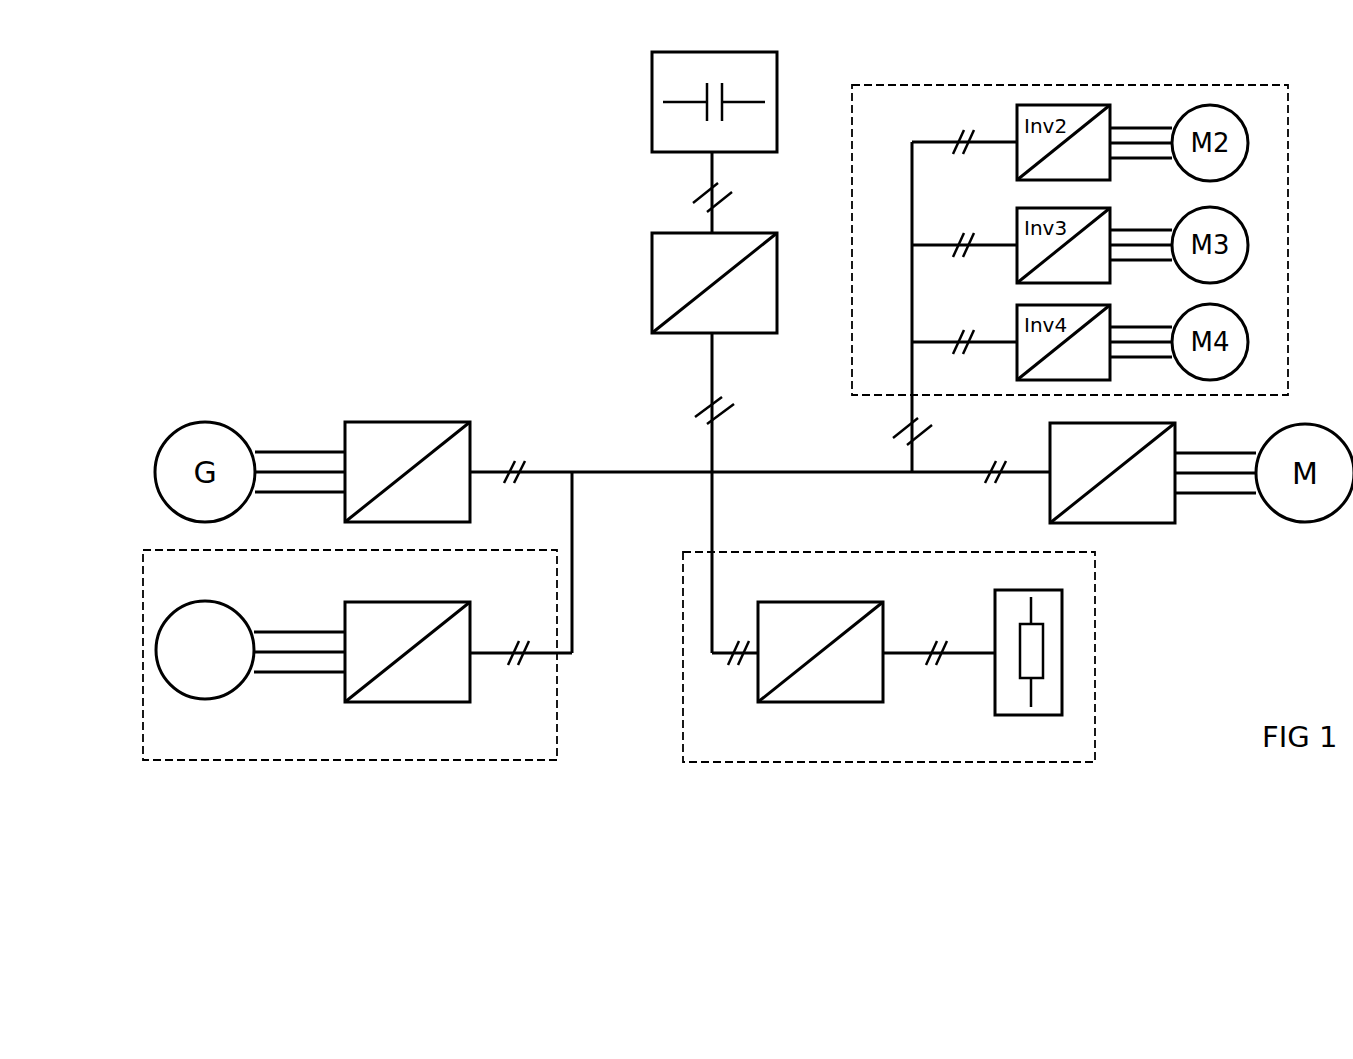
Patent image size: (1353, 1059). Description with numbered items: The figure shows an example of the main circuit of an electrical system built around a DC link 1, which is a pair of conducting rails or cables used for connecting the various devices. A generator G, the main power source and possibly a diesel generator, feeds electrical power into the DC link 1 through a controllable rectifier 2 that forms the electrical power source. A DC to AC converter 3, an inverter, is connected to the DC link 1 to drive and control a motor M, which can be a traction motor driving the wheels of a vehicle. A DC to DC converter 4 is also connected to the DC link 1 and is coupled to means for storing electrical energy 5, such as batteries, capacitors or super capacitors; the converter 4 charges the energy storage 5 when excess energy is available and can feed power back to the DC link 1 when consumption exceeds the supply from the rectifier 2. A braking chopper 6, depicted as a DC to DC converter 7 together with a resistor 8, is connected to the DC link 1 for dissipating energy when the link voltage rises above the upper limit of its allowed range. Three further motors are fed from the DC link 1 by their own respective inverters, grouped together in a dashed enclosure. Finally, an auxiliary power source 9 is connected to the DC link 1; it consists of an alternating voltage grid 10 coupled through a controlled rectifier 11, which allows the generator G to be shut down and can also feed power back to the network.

The DC link 1 is at (737, 470).
The controllable rectifier 2 is at (368, 422).
The DC to AC converter 3 is at (1125, 523).
The DC to DC converter 4 is at (652, 288).
The means for storing electrical energy 5 is at (652, 108).
The braking chopper 6 is at (889, 701).
The DC to DC converter 7 is at (808, 705).
The resistor 8 is at (1021, 715).
The auxiliary power source 9 is at (357, 700).
The alternating voltage grid 10 is at (210, 707).
The controlled rectifier 11 is at (413, 705).